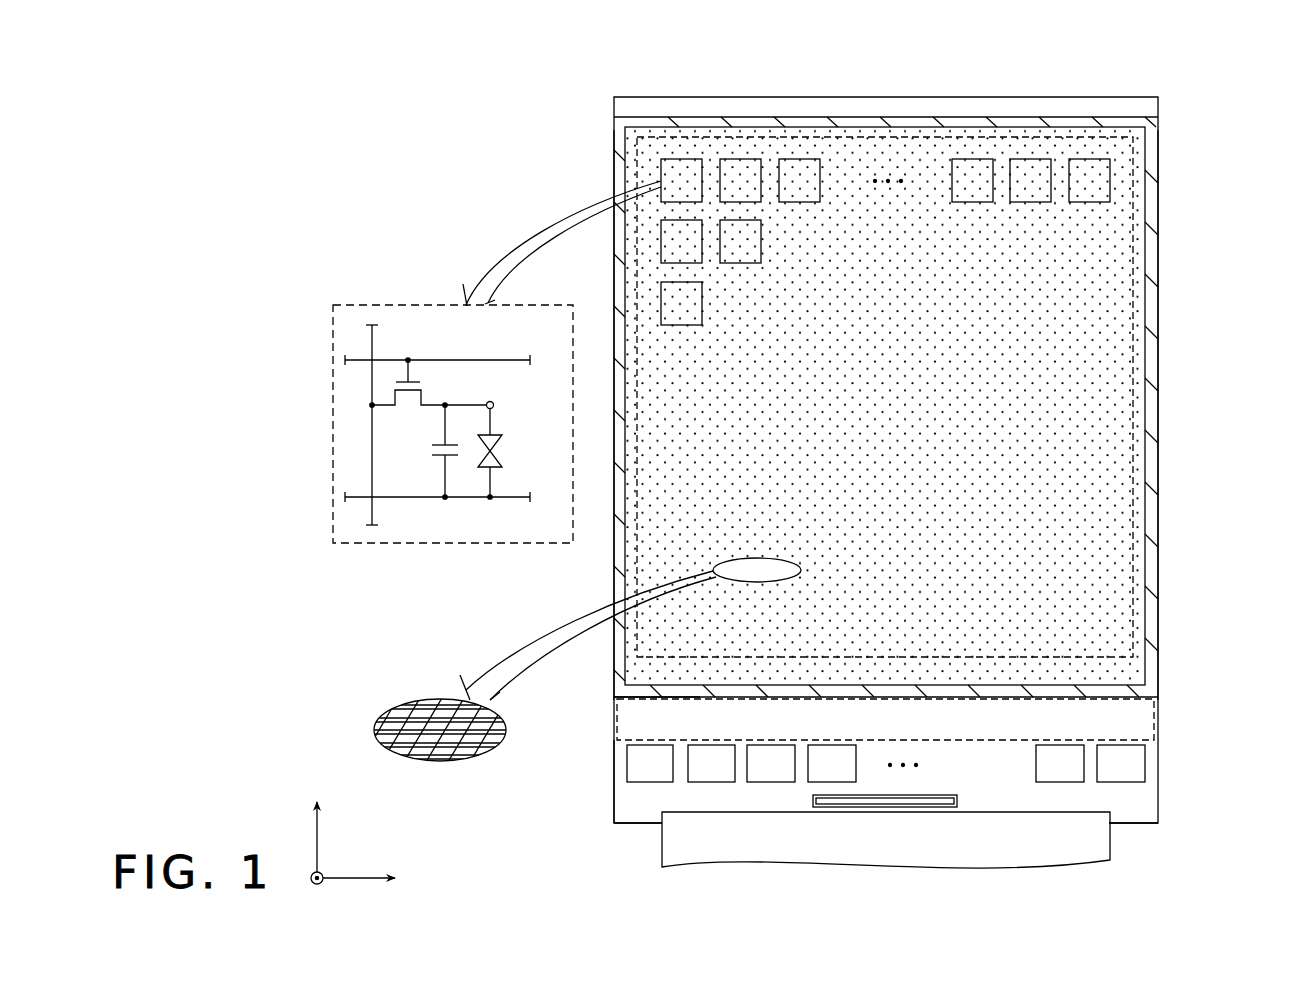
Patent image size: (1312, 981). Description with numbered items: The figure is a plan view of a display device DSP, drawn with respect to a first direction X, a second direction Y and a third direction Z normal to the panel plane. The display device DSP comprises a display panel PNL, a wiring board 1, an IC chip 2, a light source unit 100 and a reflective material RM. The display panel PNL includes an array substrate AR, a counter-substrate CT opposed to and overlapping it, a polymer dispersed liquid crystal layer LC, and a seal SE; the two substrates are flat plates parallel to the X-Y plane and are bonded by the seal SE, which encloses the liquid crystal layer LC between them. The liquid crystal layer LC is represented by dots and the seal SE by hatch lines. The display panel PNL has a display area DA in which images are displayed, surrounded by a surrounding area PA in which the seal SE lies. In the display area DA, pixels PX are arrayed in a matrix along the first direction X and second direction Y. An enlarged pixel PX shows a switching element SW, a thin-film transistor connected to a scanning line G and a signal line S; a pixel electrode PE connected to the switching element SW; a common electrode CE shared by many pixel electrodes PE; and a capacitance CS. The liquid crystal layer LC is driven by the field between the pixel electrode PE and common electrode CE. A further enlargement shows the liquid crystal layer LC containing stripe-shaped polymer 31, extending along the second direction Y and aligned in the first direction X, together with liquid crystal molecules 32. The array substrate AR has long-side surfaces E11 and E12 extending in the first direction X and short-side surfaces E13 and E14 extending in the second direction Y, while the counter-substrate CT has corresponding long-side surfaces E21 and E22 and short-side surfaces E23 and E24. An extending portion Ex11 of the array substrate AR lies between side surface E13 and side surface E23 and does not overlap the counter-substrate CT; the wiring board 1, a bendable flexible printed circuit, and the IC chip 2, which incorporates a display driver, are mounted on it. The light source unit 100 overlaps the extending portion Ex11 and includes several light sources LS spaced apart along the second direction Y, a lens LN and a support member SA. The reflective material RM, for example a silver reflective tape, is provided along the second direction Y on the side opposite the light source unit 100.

The display device DSP is at (1205, 86).
The display panel PNL is at (1163, 112).
The reflective material RM is at (1048, 105).
The side surface E11 is at (545, 415).
The side surface E21 is at (611, 142).
The side surface E12 is at (1222, 415).
The side surface E22 is at (1163, 158).
The side surface E14 is at (886, 83).
The side surface E24 is at (947, 116).
The side surface E13 is at (1130, 828).
The side surface E23 is at (632, 702).
The display area DA is at (1138, 425).
The surrounding area PA is at (1160, 527).
The seal SE is at (1150, 628).
The liquid crystal layer LC is at (505, 452).
The counter-substrate CT is at (1160, 690).
The array substrate AR is at (1160, 748).
The extending portion Ex11 is at (1150, 784).
The light sources LS is at (717, 774).
The lens LN is at (620, 745).
The support member SA is at (616, 731).
The wiring board 1 is at (1068, 857).
The IC chip 2 is at (900, 809).
The light source unit 100 is at (557, 806).
The pixel PX is at (797, 160).
The scanning line G is at (388, 358).
The signal line S is at (372, 440).
The switching element SW is at (434, 392).
The pixel electrode PE is at (496, 405).
The capacitance CS is at (432, 452).
The common electrode CE is at (510, 499).
The polymer 31 is at (411, 722).
The liquid crystal molecules 32 is at (434, 745).
The first direction X is at (316, 822).
The second direction Y is at (370, 880).
The third direction Z is at (308, 891).